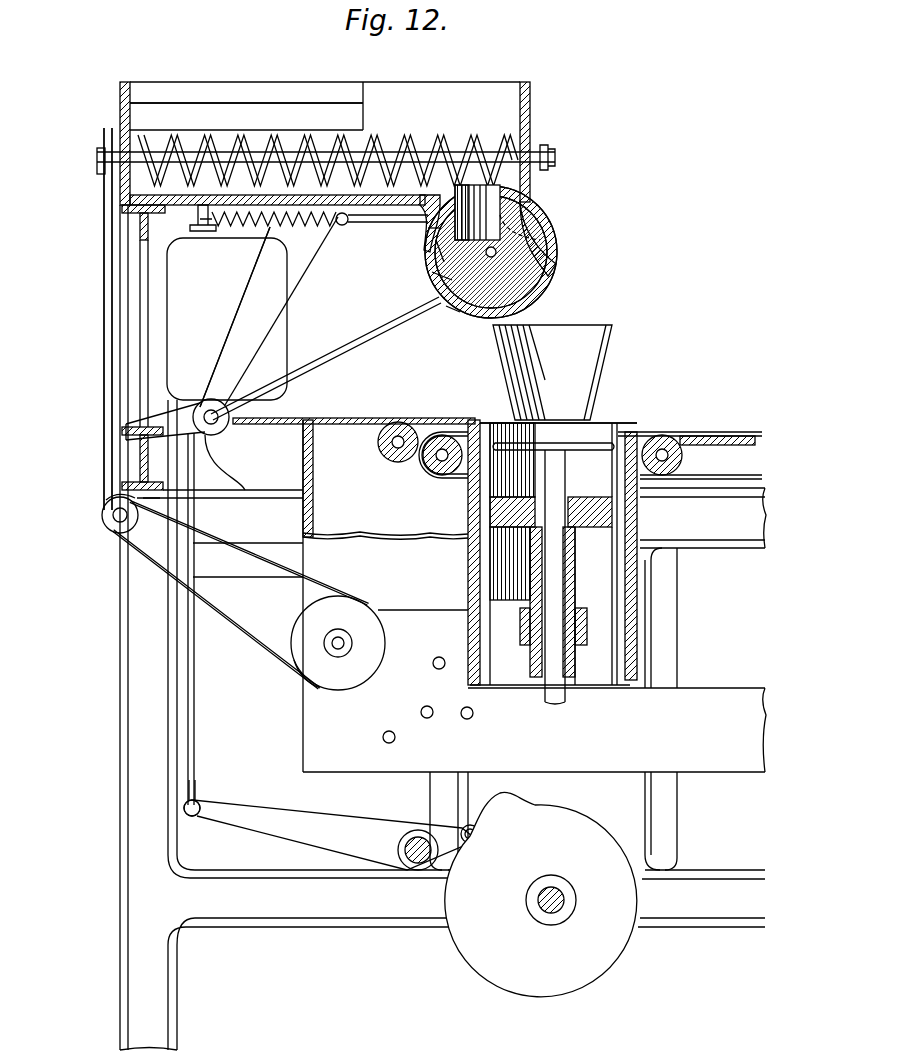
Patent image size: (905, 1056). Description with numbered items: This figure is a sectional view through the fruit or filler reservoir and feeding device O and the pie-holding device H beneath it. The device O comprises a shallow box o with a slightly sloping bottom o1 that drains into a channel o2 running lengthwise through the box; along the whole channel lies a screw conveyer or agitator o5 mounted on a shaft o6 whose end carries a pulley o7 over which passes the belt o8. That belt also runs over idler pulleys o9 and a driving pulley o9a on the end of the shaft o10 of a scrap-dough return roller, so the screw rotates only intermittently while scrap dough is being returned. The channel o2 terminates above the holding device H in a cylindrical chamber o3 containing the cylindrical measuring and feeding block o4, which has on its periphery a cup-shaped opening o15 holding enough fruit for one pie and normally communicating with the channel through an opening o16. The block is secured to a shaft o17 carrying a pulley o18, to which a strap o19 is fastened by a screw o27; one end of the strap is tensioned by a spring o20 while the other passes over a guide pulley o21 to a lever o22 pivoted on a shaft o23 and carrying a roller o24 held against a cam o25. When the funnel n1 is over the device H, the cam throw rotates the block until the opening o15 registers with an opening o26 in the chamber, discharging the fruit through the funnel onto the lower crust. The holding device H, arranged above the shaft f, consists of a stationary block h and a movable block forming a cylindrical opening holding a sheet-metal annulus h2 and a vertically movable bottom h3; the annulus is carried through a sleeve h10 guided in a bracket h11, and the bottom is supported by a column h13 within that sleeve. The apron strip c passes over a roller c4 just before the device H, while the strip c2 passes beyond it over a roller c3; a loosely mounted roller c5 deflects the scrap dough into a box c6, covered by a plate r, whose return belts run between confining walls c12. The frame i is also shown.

The fruit reservoir and feeding device O is at (338, 164).
The shallow box o is at (178, 92).
The sloping bottom o1 is at (232, 112).
The screw conveyer or agitator o5 is at (468, 156).
The shaft o6 is at (386, 158).
The pulley o7 is at (104, 140).
The belt o8 is at (118, 310).
The cylindrical chamber o3 is at (556, 262).
The opening o26 is at (545, 290).
The screw o27 is at (520, 222).
The shaft o17 is at (545, 240).
The spring o20 is at (268, 232).
The channel o2 is at (318, 253).
The strap o19 is at (368, 228).
The opening o16 is at (430, 228).
The cup-shaped opening o15 is at (433, 250).
The measuring and feeding block o4 is at (440, 286).
The pulley o18 is at (445, 311).
The guide-pulley o21 is at (224, 410).
The idler-pulleys o9 is at (116, 522).
The shaft o10 is at (352, 643).
The driving-pulley o9a is at (312, 680).
The lever o22 is at (305, 822).
The shaft o23 is at (414, 842).
The roller o24 is at (480, 836).
The cam o25 is at (498, 962).
The shaft f is at (556, 900).
The walls c12 is at (724, 772).
The box c6 is at (388, 581).
The plate r is at (376, 418).
The roller c5 is at (386, 452).
The roller c3 is at (437, 464).
The strip c2 is at (462, 474).
The holding device H is at (552, 552).
The stationary block h is at (586, 606).
The movable bottom h3 is at (528, 446).
The column h13 is at (560, 700).
The sleeve h10 is at (537, 650).
The bracket h11 is at (584, 642).
The sheet-metal annulus h2 is at (605, 425).
The funnel n1 is at (598, 362).
The strip c is at (700, 436).
The roller c4 is at (682, 458).
The frame i is at (128, 740).